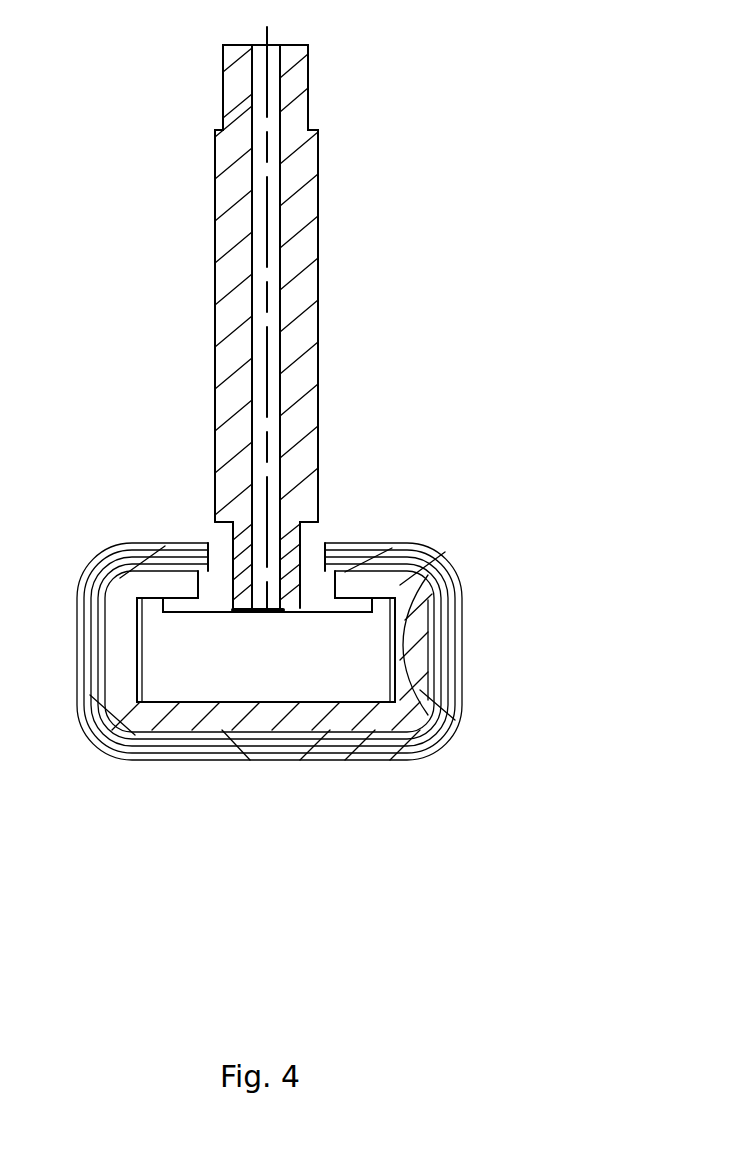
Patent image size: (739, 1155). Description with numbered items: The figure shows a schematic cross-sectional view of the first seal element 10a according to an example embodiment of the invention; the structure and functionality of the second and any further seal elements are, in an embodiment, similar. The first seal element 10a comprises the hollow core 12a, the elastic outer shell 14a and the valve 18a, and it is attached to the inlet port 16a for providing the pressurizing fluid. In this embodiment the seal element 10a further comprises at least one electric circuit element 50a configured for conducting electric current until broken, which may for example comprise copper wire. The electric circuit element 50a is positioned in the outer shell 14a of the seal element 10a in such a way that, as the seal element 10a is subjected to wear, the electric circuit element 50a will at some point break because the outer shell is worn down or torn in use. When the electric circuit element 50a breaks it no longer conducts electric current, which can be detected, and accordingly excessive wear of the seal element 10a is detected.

The first seal element 10a is at (98, 95).
The hollow core 12a is at (374, 651).
The elastic outer shell 14a is at (422, 760).
The inlet port 16a is at (300, 376).
The valve 18a is at (216, 538).
The electric circuit element 50a is at (275, 766).